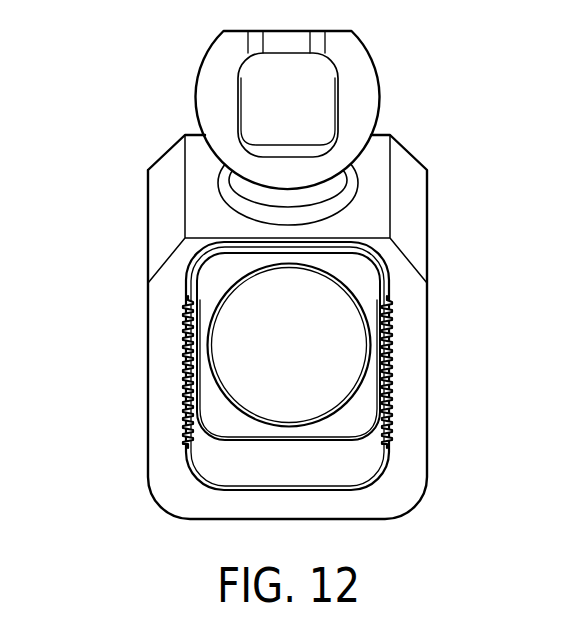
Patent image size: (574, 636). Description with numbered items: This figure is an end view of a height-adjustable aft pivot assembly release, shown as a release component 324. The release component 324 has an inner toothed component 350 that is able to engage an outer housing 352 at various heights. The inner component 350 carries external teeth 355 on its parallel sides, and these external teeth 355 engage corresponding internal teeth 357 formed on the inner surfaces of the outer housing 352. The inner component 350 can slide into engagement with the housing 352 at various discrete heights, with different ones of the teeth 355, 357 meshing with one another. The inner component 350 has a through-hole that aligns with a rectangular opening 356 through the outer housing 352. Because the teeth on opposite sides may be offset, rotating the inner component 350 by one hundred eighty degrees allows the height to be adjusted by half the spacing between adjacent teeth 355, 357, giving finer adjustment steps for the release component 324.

The release component 324 is at (90, 196).
The outer housing 352 is at (167, 238).
The inner toothed component 350 is at (213, 415).
The external teeth 355 is at (385, 345).
The internal teeth 357 is at (383, 432).
The rectangular opening 356 is at (353, 470).